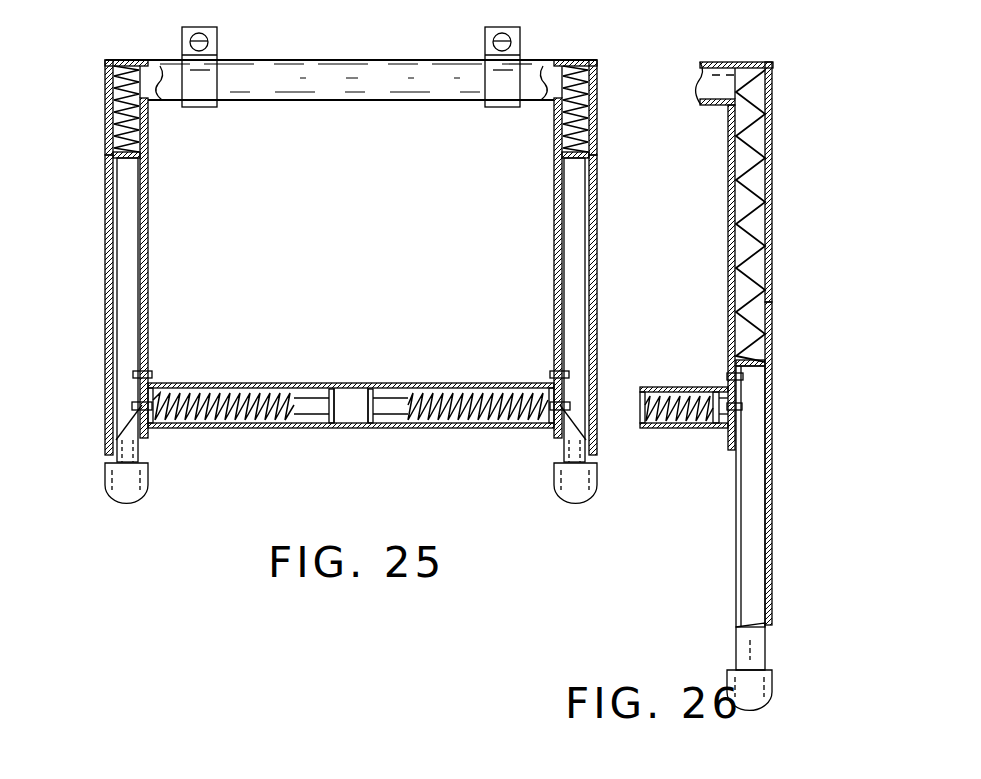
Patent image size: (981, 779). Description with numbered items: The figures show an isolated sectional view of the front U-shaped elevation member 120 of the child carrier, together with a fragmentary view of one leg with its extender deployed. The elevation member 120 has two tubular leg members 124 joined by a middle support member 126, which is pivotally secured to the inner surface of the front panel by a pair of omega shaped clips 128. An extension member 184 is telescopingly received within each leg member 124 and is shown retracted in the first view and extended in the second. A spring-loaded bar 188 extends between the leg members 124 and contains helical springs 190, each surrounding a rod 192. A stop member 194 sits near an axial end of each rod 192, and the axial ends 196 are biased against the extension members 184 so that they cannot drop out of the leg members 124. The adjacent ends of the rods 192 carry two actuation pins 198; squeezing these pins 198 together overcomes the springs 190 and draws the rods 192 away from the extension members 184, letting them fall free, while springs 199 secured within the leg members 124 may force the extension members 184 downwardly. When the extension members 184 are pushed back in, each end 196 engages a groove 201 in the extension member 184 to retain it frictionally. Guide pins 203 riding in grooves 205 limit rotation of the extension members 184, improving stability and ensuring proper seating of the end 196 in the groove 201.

In FIG. 25, the elevation member 120 is at (325, 57).
In FIG. 25, the leg member 124 is at (112, 116).
In FIG. 26, the leg member 124 is at (772, 212).
In FIG. 25, the middle support member 126 is at (428, 73).
In FIG. 25, the omega shaped clip 128 is at (187, 68).
In FIG. 25, the extension member 184 is at (106, 207).
In FIG. 26, the extension member 184 is at (772, 520).
In FIG. 25, the spring-loaded bar 188 is at (352, 381).
In FIG. 26, the spring-loaded bar 188 is at (680, 386).
In FIG. 25, the helical spring 190 is at (222, 428).
In FIG. 26, the helical spring 190 is at (662, 430).
In FIG. 25, the rod 192 is at (215, 387).
In FIG. 26, the rod 192 is at (645, 387).
In FIG. 25, the stop member 194 is at (153, 428).
In FIG. 26, the stop member 194 is at (716, 430).
In FIG. 25, the axial end 196 is at (133, 405).
In FIG. 26, the axial end 196 is at (742, 406).
In FIG. 25, the actuation pin 198 is at (331, 428).
In FIG. 25, the spring 199 is at (112, 83).
In FIG. 26, the spring 199 is at (772, 122).
In FIG. 25, the groove 201 is at (133, 411).
In FIG. 26, the groove 201 is at (735, 608).
In FIG. 25, the guide pin 203 is at (150, 372).
In FIG. 26, the guide pin 203 is at (728, 376).
In FIG. 25, the groove 205 is at (137, 242).
In FIG. 26, the groove 205 is at (735, 495).